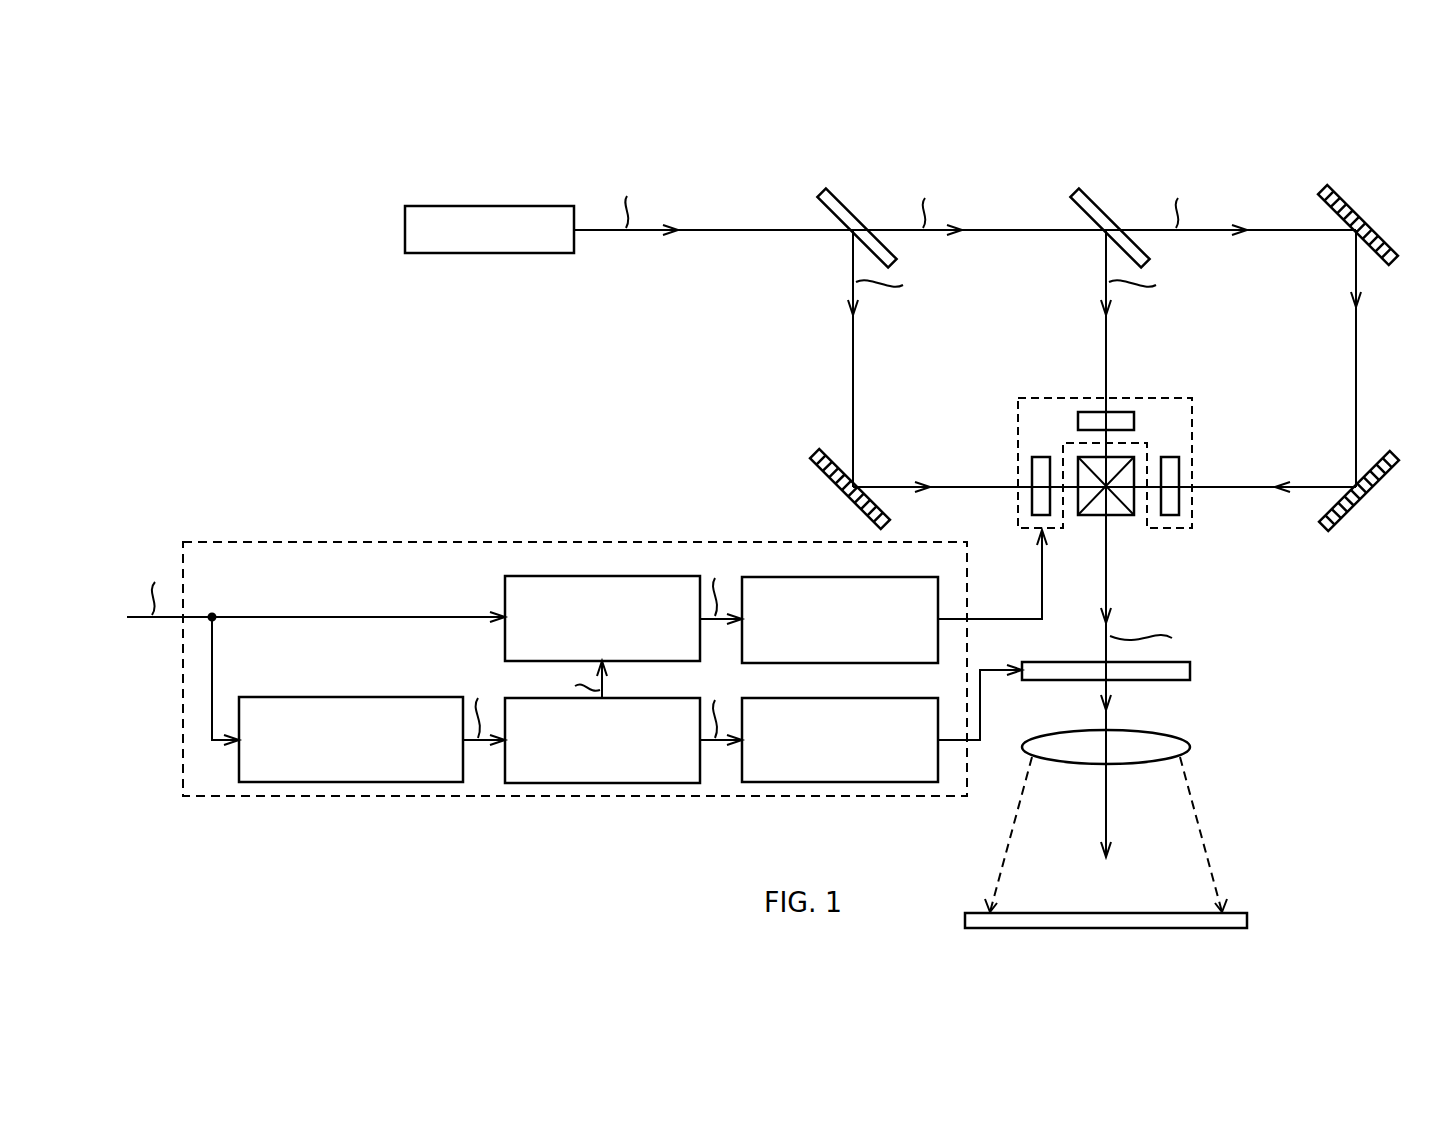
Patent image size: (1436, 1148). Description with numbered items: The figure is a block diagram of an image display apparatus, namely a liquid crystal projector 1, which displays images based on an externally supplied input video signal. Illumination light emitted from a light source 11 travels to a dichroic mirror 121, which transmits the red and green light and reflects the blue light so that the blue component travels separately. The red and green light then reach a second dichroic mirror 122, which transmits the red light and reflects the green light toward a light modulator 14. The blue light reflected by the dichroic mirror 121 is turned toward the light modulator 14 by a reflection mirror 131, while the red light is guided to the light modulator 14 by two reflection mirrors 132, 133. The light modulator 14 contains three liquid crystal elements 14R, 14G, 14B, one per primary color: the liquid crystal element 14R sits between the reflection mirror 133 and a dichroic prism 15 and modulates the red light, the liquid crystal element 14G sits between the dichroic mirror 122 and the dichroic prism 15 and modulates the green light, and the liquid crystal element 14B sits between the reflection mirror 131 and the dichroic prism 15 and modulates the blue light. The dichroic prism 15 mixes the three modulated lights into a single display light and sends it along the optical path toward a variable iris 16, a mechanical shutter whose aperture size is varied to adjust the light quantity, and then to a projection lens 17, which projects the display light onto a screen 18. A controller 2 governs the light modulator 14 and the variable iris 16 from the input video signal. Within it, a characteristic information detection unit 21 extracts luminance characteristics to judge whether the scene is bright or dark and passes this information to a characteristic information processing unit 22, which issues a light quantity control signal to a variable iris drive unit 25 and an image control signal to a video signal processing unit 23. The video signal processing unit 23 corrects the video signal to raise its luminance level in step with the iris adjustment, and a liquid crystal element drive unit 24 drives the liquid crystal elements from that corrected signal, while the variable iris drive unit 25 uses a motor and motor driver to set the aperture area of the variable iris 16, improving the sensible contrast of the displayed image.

The liquid crystal projector 1 is at (1221, 79).
The light source 11 is at (497, 207).
The dichroic mirror 121 is at (848, 200).
The dichroic mirror 122 is at (1100, 200).
The reflection mirror 131 is at (822, 452).
The reflection mirror 132 is at (1350, 200).
The reflection mirror 133 is at (1378, 491).
The light modulator 14 is at (1049, 397).
The liquid crystal element 14B is at (1032, 470).
The liquid crystal element 14G is at (1128, 412).
The liquid crystal element 14R is at (1169, 517).
The dichroic prism 15 is at (1125, 458).
The variable iris 16 is at (1192, 672).
The projection lens 17 is at (1192, 746).
The screen 18 is at (1247, 921).
The controller 2 is at (599, 542).
The characteristic information detection unit 21 is at (368, 695).
The characteristic information processing unit 22 is at (620, 697).
The video signal processing unit 23 is at (620, 576).
The liquid crystal element drive unit 24 is at (858, 577).
The variable iris drive unit 25 is at (858, 697).